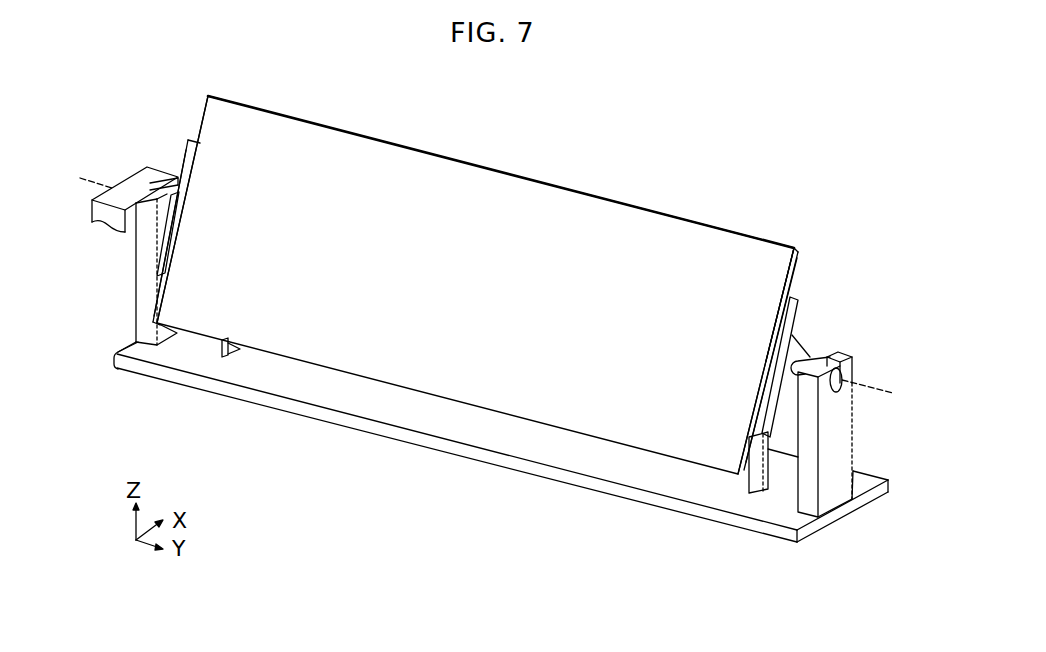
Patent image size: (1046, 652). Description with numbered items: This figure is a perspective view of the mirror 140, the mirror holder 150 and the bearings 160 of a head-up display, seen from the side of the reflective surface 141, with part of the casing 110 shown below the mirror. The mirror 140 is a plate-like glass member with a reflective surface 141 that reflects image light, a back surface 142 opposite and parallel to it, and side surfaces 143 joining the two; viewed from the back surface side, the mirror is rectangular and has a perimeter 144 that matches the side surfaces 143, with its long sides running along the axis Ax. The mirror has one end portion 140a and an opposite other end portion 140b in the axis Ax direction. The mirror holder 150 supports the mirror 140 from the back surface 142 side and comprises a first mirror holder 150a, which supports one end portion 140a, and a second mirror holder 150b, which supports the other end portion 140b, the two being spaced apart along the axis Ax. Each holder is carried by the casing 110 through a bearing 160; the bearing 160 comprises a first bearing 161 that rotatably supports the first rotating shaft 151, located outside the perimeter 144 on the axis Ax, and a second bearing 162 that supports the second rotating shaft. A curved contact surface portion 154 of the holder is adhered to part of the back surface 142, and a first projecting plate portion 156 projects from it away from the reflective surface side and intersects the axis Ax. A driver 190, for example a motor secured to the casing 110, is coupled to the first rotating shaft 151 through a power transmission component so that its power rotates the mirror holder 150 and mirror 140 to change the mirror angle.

The casing 110 is at (424, 443).
The mirror 140 is at (486, 270).
The one end portion 140a is at (207, 205).
The other end portion 140b is at (748, 337).
The reflective surface 141 is at (580, 202).
The back surface 142 is at (793, 260).
The side surfaces 143 is at (203, 118).
The perimeter 144 is at (550, 255).
The mirror holder 150 is at (491, 392).
The first mirror holder 150a is at (176, 280).
The second mirror holder 150b is at (798, 387).
The first rotating shaft 151 is at (155, 185).
The contact surface portion 154 is at (170, 243).
The first projecting plate portion 156 is at (808, 357).
The bearing 160 is at (475, 457).
The first bearing 161 is at (148, 297).
The second bearing 162 is at (230, 352).
The driver 190 is at (120, 177).
The axis Ax is at (492, 282).